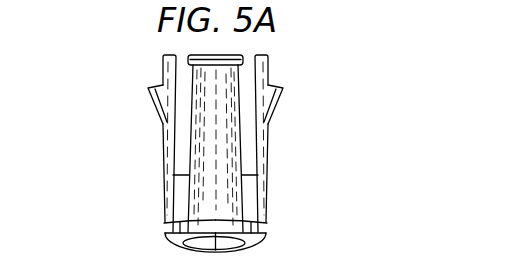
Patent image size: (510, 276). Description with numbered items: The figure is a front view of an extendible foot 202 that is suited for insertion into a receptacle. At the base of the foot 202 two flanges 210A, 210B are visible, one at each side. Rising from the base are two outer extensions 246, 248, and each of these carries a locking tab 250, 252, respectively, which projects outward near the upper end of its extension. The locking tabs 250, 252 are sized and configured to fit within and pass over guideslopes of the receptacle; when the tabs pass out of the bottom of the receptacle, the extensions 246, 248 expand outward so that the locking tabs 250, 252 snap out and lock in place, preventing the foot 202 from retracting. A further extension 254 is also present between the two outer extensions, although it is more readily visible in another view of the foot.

The extendible foot 202 is at (136, 158).
The extension 246 is at (163, 72).
The extension 248 is at (268, 72).
The locking tab 250 is at (152, 97).
The locking tab 252 is at (280, 97).
The extension 254 is at (240, 186).
The flange 210A is at (168, 224).
The flange 210B is at (264, 226).